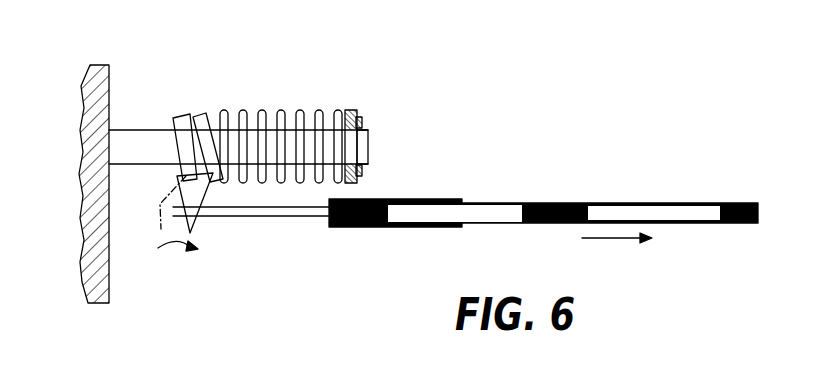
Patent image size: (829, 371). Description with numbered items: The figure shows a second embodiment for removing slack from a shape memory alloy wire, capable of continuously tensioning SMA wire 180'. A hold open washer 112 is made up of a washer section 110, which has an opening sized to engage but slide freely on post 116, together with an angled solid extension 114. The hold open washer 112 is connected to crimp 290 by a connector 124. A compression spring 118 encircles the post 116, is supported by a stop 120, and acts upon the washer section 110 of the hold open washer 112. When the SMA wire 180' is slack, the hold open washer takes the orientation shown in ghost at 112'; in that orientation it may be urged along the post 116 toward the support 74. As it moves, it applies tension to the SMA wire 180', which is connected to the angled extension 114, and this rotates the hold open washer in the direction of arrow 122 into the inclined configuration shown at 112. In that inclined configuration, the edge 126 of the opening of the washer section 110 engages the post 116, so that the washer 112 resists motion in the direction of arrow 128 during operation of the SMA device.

The support 74 is at (90, 135).
The washer section 110 is at (213, 116).
The hold open washer 112 is at (152, 96).
The hold open washer in ghost orientation 112' is at (149, 151).
The angled solid extension 114 is at (200, 223).
The post 116 is at (127, 167).
The compression spring 118 is at (337, 108).
The stop 120 is at (362, 122).
The arrow 122 is at (173, 255).
The connector 124 is at (287, 218).
The edge 126 is at (234, 120).
The arrow 128 is at (618, 241).
The SMA wire 180' is at (573, 171).
The crimp 290 is at (410, 199).